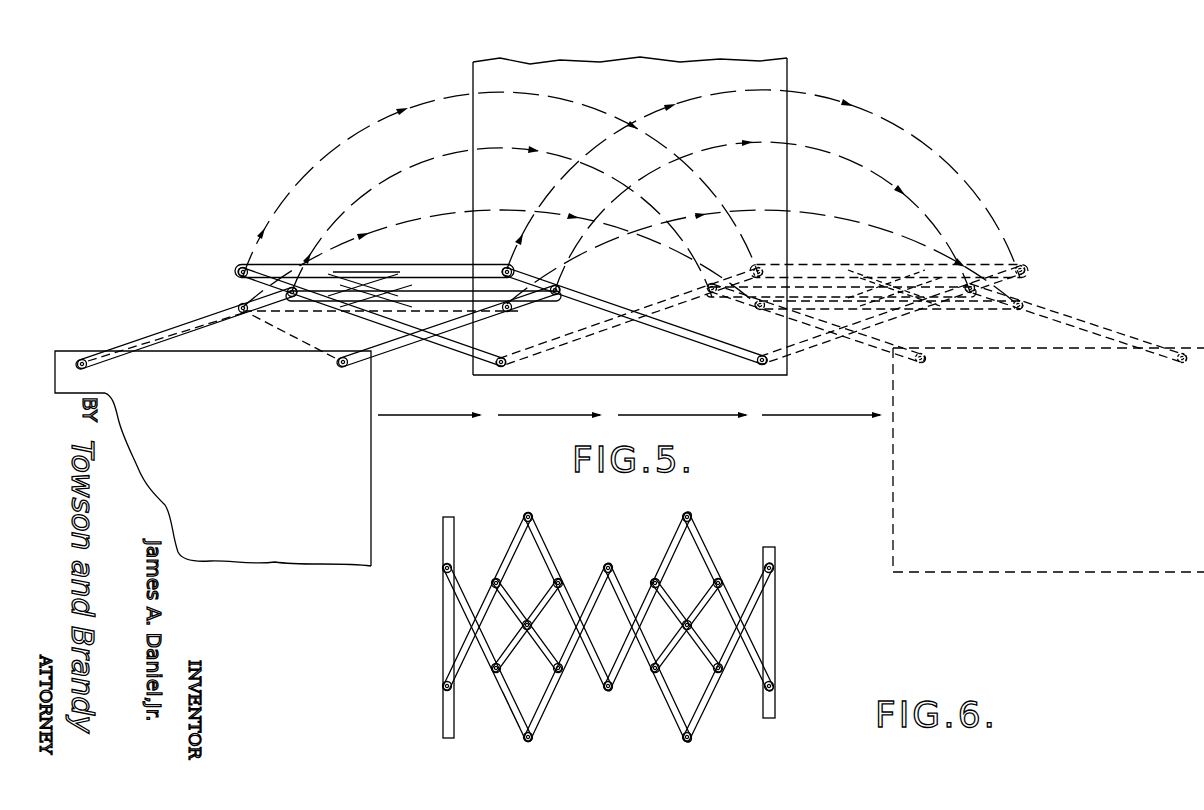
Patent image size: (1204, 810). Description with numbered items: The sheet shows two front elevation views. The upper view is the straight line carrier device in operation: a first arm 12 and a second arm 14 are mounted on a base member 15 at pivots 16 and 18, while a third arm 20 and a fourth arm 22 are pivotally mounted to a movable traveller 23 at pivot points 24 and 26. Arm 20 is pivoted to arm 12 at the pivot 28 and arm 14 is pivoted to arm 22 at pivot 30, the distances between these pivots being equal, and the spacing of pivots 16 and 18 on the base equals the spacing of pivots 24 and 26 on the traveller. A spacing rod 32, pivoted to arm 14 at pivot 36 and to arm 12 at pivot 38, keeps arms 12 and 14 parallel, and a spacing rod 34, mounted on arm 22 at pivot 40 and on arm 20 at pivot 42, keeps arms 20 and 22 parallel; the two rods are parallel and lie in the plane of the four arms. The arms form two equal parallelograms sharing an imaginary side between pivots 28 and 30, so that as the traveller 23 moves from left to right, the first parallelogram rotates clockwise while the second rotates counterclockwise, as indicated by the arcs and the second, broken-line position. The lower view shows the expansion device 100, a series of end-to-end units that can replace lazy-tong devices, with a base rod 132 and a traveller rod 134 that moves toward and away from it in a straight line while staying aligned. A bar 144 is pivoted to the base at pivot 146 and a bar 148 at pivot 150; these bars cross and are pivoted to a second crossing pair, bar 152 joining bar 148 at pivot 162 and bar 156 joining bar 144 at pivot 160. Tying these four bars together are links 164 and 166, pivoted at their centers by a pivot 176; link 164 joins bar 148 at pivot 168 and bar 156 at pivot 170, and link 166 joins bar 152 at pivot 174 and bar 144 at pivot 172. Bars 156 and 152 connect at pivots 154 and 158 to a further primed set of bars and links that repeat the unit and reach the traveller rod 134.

In FIG. 5, the first arm 12 is at (443, 348).
In FIG. 5, the second arm 14 is at (690, 336).
In FIG. 5, the base member 15 is at (644, 366).
In FIG. 5, the pivot 16 is at (501, 368).
In FIG. 5, the pivot 18 is at (762, 366).
In FIG. 5, the third arm 20 is at (211, 324).
In FIG. 5, the fourth arm 22 is at (389, 353).
In FIG. 5, the traveller 23 is at (358, 503).
In FIG. 5, the pivot point 24 is at (88, 368).
In FIG. 5, the pivot point 26 is at (342, 367).
In FIG. 5, the pivot 28 is at (284, 293).
In FIG. 5, the pivot 30 is at (560, 288).
In FIG. 5, the spacing rod 32 is at (437, 265).
In FIG. 5, the spacing rod 34 is at (425, 308).
In FIG. 5, the pivot 36 is at (510, 267).
In FIG. 5, the pivot 38 is at (243, 269).
In FIG. 5, the pivot 40 is at (511, 310).
In FIG. 5, the pivot 42 is at (248, 313).
In FIG. 6, the expansion device 100 is at (436, 644).
In FIG. 6, the base rod 132 is at (441, 605).
In FIG. 6, the traveller rod 134 is at (770, 627).
In FIG. 6, the bar 144 is at (458, 578).
In FIG. 6, the pivot 146 is at (444, 565).
In FIG. 6, the bar 148 is at (458, 656).
In FIG. 6, the pivot 150 is at (444, 689).
In FIG. 6, the bar 152 is at (540, 546).
In FIG. 6, the pivot 154 is at (608, 564).
In FIG. 6, the bar 156 is at (553, 700).
In FIG. 6, the pivot 158 is at (609, 691).
In FIG. 6, the pivot 160 is at (531, 740).
In FIG. 6, the pivot 162 is at (529, 514).
In FIG. 6, the link 164 is at (508, 602).
In FIG. 6, the link 166 is at (491, 672).
In FIG. 6, the pivot 168 is at (498, 548).
In FIG. 6, the pivot 170 is at (561, 676).
In FIG. 6, the pivot 172 is at (506, 700).
In FIG. 6, the pivot 174 is at (558, 566).
In FIG. 6, the pivot 176 is at (531, 626).